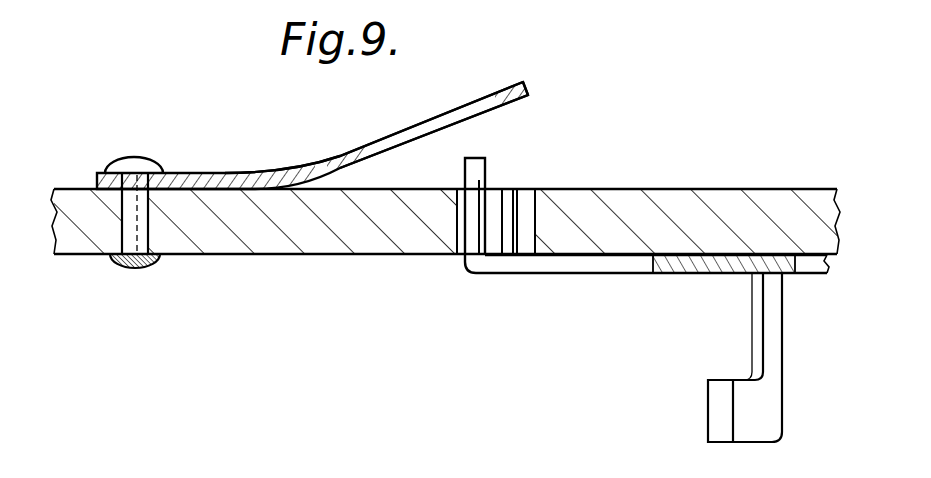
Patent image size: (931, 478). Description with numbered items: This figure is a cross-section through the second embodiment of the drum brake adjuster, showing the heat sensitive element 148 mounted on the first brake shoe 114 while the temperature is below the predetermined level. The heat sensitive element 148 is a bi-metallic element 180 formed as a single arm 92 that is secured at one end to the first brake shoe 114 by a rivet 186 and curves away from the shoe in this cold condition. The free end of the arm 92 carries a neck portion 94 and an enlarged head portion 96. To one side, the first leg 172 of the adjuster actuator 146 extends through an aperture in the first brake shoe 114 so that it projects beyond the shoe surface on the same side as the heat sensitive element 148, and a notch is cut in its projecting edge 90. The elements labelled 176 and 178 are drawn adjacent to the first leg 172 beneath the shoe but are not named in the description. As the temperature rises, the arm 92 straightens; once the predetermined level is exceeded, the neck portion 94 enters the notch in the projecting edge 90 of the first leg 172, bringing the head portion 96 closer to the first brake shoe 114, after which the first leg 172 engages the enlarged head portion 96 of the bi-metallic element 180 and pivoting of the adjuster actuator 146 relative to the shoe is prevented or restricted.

The projecting edge 90 is at (477, 158).
The arm 92 is at (341, 130).
The neck portion 94 is at (462, 116).
The enlarged head portion 96 is at (530, 90).
The first brake shoe 114 is at (232, 237).
The adjuster actuator 146 is at (690, 280).
The heat sensitive element 148 is at (203, 166).
The first leg 172 is at (475, 220).
The spacer 176 is at (525, 243).
The connector block 178 is at (742, 418).
The bi-metallic element 180 is at (279, 161).
The rivet 186 is at (130, 268).